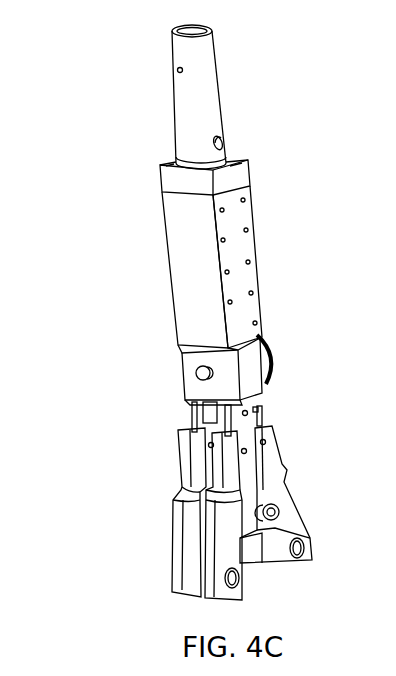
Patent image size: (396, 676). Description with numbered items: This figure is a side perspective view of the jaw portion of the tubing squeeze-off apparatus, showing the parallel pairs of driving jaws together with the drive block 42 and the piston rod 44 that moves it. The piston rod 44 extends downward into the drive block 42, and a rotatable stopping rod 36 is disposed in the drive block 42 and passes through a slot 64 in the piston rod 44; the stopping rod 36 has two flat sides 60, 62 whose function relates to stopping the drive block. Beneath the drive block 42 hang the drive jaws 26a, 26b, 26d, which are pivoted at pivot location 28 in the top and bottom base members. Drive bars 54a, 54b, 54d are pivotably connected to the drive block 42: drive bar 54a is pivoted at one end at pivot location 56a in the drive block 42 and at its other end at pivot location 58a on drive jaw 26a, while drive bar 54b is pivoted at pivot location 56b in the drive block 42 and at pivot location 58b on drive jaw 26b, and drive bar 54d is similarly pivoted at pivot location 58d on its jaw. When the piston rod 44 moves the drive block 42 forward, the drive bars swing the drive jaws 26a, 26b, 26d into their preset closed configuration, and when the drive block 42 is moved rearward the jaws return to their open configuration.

The slot 64 is at (216, 328).
The piston rod 44 is at (231, 345).
The flat side 62 is at (272, 372).
The drive block 42 is at (255, 387).
The rotatable stopping rod 36 is at (193, 378).
The flat side 60 is at (199, 370).
The pivot location 56a is at (248, 412).
The pivot location 56b is at (263, 400).
The drive bar 54a is at (212, 441).
The drive bar 54b is at (266, 422).
The drive bar 54d is at (188, 428).
The pivot location 58a is at (243, 453).
The pivot location 58b is at (266, 444).
The pivot location 58d is at (209, 449).
The drive jaw 26a is at (204, 588).
The drive jaw 26b is at (299, 498).
The drive jaw 26d is at (176, 567).
The pivot location 28 is at (281, 523).